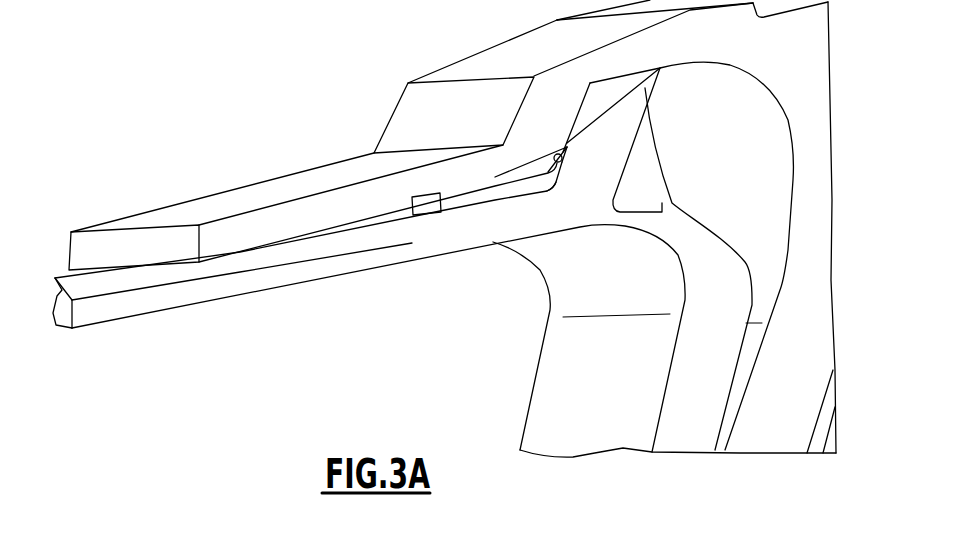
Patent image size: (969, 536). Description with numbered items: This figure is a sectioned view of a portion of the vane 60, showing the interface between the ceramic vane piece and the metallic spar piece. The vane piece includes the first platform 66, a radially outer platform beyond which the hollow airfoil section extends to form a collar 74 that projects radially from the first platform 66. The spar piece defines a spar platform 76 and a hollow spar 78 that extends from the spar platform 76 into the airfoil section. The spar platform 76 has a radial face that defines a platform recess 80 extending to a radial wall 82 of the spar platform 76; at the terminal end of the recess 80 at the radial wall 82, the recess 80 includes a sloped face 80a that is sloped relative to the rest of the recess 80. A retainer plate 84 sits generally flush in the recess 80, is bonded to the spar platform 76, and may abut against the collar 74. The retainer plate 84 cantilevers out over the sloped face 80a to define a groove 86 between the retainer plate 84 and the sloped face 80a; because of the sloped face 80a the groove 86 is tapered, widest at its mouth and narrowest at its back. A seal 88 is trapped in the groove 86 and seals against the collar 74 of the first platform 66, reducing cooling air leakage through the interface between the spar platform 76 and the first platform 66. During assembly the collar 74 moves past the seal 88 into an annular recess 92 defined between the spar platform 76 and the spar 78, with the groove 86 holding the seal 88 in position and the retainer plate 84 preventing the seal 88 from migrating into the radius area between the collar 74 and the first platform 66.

The vane 60 is at (252, 401).
The first platform 66 is at (132, 302).
The collar 74 is at (636, 95).
The spar platform 76 is at (80, 244).
The spar 78 is at (315, 237).
The platform recess 80 is at (440, 193).
The sloped face 80a is at (580, 153).
The radial wall 82 is at (557, 100).
The retainer plate 84 is at (480, 192).
The groove 86 is at (592, 136).
The seal 88 is at (568, 152).
The annular recess 92 is at (651, 172).